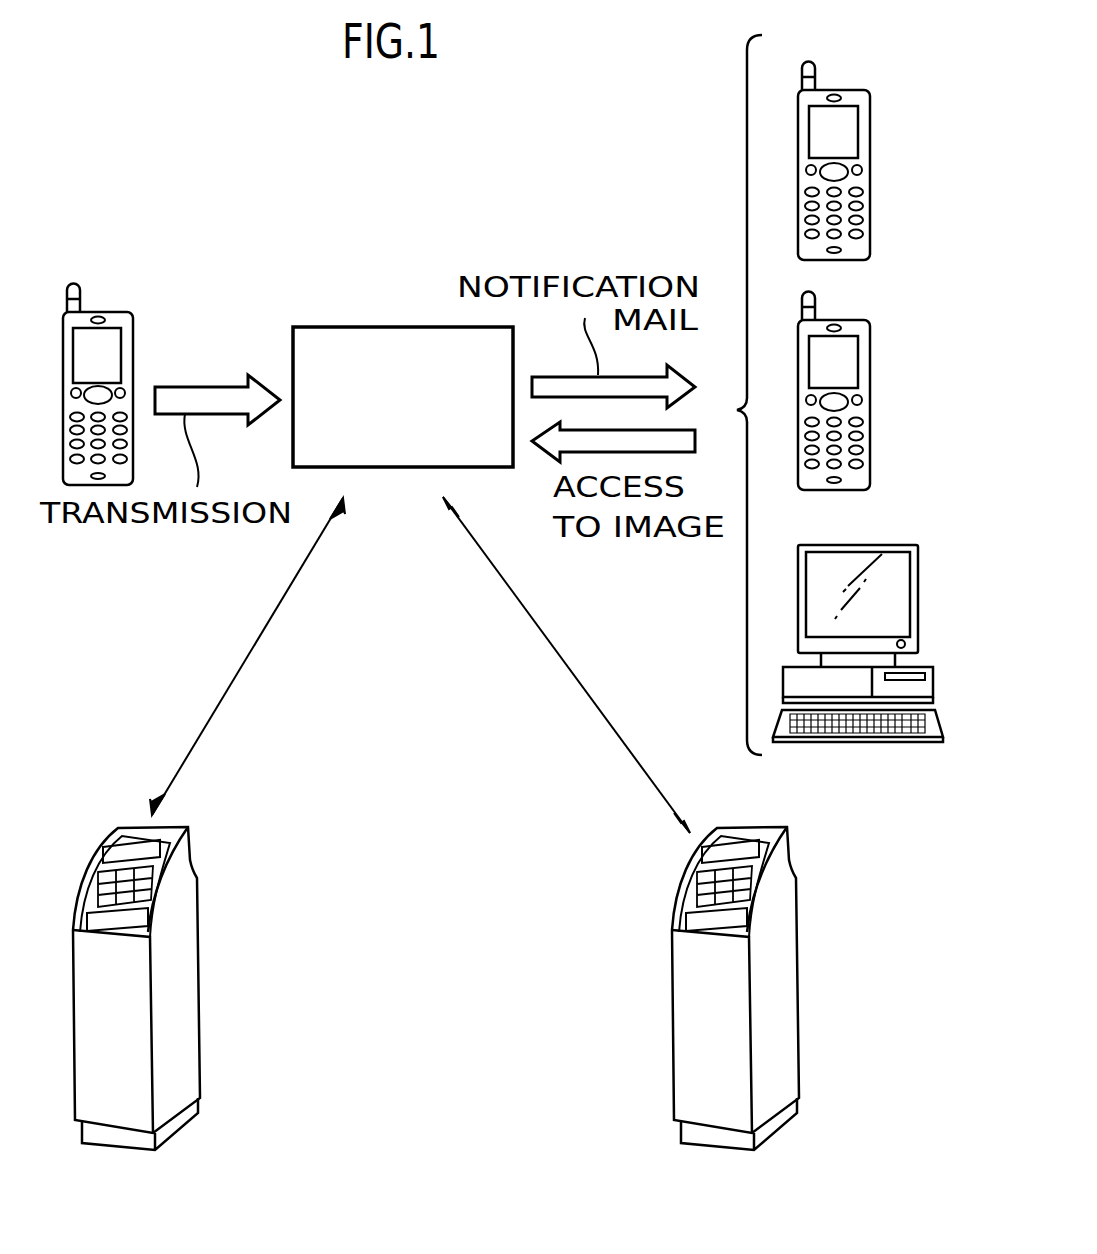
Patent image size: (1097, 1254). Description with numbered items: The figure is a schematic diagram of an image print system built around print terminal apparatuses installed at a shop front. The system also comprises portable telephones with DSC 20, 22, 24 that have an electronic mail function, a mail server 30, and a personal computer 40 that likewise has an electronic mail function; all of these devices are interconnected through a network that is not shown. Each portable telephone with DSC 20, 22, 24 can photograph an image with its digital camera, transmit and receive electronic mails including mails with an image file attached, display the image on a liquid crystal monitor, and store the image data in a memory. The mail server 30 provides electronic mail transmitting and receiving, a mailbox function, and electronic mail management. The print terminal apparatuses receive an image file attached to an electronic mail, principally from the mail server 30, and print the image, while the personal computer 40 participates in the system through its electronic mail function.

The portable telephone with DSC 20 is at (108, 310).
The portable telephone with DSC 22 is at (865, 95).
The portable telephone with DSC 24 is at (865, 325).
The mail server 30 is at (378, 327).
The personal computer 40 is at (895, 545).